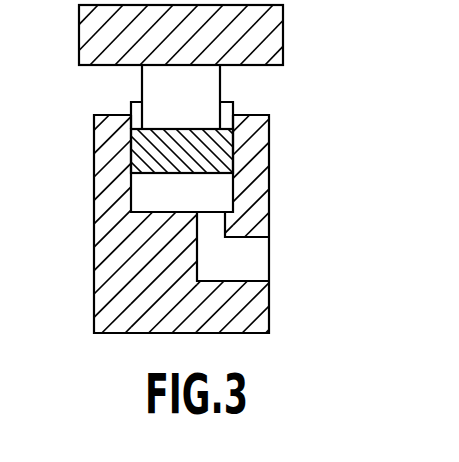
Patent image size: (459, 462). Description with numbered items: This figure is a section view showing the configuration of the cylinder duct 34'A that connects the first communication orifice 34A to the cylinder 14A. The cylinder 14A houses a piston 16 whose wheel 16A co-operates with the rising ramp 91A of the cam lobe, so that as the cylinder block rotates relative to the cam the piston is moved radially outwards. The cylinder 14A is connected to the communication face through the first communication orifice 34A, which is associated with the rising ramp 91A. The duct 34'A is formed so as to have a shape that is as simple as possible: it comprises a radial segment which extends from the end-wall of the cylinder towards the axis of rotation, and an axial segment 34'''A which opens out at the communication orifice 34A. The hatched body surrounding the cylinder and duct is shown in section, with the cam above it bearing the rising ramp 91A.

The rising ramp 91A is at (260, 66).
The wheel 16A is at (160, 88).
The piston 16 is at (143, 150).
The cylinder 14A is at (131, 200).
The first communication orifice 34A is at (270, 268).
The cylinder duct 34'A is at (293, 186).
The axial segment 34'''A is at (285, 242).